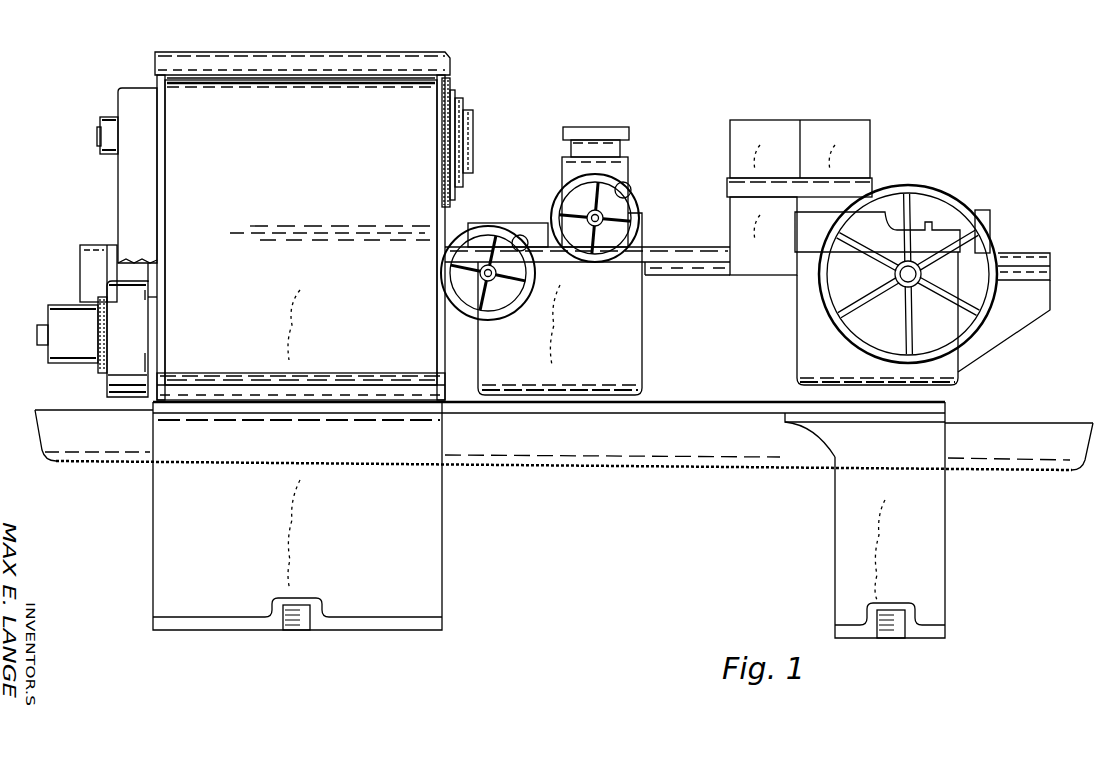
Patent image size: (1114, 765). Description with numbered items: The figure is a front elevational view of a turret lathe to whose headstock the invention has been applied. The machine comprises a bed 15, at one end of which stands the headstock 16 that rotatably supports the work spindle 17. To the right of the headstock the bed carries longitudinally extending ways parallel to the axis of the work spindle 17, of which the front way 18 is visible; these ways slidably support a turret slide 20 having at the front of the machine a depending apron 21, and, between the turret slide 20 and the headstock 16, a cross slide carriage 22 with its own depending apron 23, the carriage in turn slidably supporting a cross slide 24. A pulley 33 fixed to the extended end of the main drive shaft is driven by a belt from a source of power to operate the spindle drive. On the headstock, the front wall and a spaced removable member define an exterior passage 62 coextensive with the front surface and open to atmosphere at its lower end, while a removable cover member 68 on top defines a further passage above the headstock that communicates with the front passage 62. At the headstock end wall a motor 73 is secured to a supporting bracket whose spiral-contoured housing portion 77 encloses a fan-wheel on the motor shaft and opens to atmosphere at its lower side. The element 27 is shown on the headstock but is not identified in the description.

The bed 15 is at (1018, 318).
The headstock 16 is at (158, 80).
The work spindle 17 is at (110, 118).
The front way 18 is at (672, 250).
The turret slide 20 is at (982, 210).
The depending apron 21 is at (800, 340).
The cross slide carriage 22 is at (532, 240).
The depending apron 23 is at (633, 345).
The cross slide 24 is at (620, 180).
The pulley stack 27 is at (470, 118).
The pulley 33 is at (96, 245).
The passage 62 is at (305, 388).
The removable cover member 68 is at (338, 53).
The motor 73 is at (63, 306).
The housing portion 77 is at (106, 380).